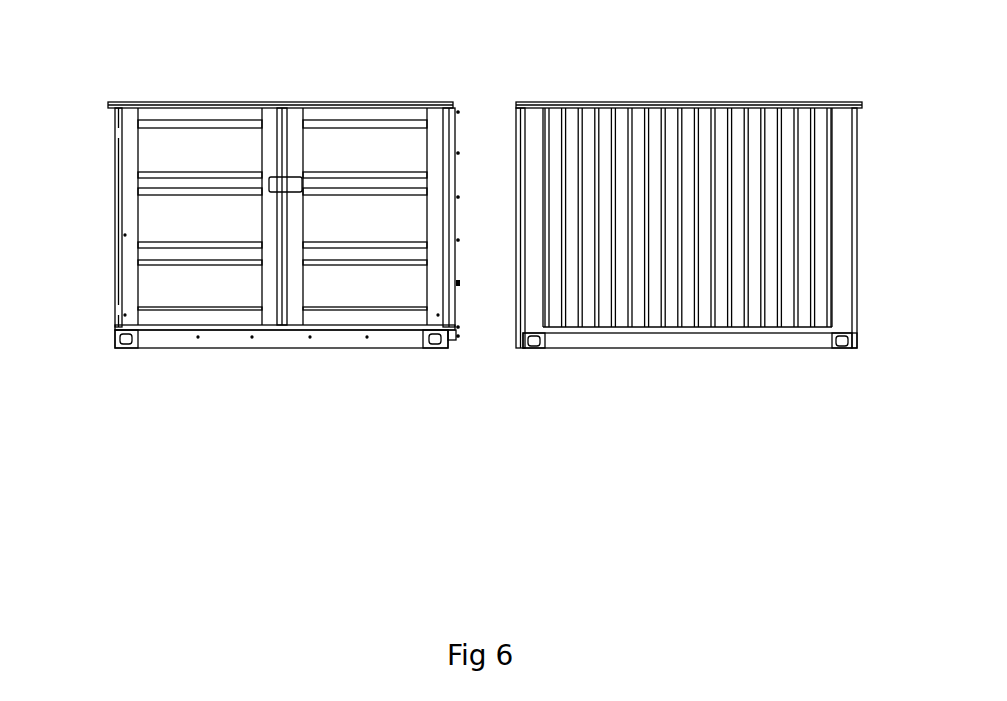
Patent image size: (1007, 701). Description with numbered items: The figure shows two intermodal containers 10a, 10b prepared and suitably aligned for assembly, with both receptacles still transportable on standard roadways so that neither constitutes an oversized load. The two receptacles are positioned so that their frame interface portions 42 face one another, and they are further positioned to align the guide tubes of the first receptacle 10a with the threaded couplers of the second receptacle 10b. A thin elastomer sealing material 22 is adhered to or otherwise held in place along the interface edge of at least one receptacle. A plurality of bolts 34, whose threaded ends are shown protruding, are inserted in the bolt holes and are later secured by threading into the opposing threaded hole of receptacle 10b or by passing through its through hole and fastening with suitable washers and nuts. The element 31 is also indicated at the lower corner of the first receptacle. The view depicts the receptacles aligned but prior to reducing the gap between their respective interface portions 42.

The intermodal container 10a is at (163, 222).
The intermodal container 10b is at (826, 224).
The elastomer sealing material 22 is at (456, 130).
The bottom corner connector 31 is at (465, 337).
The bolts 34 is at (458, 283).
The frame interface portion 42 is at (508, 113).